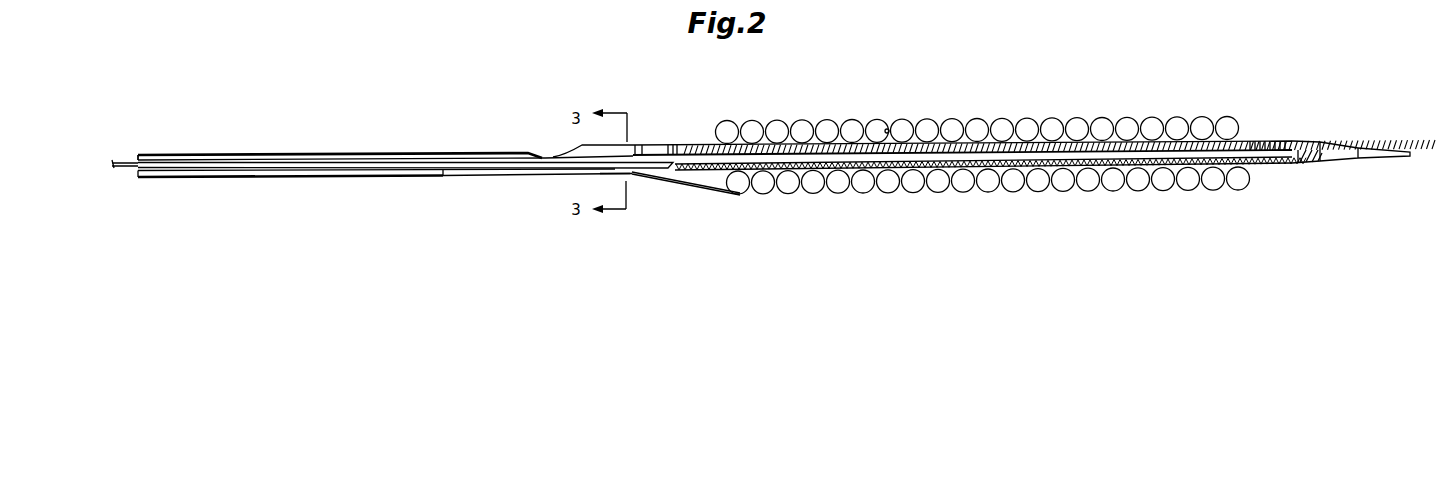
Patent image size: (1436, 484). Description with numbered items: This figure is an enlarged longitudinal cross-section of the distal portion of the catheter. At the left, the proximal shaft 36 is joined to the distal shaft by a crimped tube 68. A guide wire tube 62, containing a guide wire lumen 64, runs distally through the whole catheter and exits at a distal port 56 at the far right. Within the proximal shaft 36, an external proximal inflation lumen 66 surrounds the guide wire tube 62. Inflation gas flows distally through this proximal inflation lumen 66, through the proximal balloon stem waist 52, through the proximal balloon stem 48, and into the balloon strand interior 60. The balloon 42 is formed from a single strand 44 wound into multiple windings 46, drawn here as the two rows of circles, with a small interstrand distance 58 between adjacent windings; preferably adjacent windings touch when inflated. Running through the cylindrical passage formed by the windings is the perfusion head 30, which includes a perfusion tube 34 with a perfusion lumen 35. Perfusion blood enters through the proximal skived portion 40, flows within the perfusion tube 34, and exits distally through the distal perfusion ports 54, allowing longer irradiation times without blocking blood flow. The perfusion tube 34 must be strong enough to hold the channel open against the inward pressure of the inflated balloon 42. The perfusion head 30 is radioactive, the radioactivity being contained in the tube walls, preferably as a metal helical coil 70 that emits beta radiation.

The perfusion head 30 is at (1002, 95).
The perfusion tube 34 is at (647, 143).
The perfusion lumen 35 is at (702, 145).
The proximal shaft 36 is at (331, 153).
The proximal skived portion 40 is at (560, 155).
The balloon 42 is at (1058, 122).
The single strand 44 is at (727, 124).
The windings 46 is at (877, 123).
The proximal balloon stem 48 is at (720, 181).
The proximal balloon stem waist 52 is at (638, 176).
The distal perfusion ports 54 is at (1318, 147).
The distal port 56 is at (1411, 156).
The interstrand distance 58 is at (850, 188).
The balloon strand interior 60 is at (886, 134).
The guide wire tube 62 is at (133, 157).
The guide wire lumen 64 is at (112, 141).
The proximal inflation lumen 66 is at (468, 176).
The crimped tube 68 is at (495, 169).
The helical coil 70 is at (680, 145).